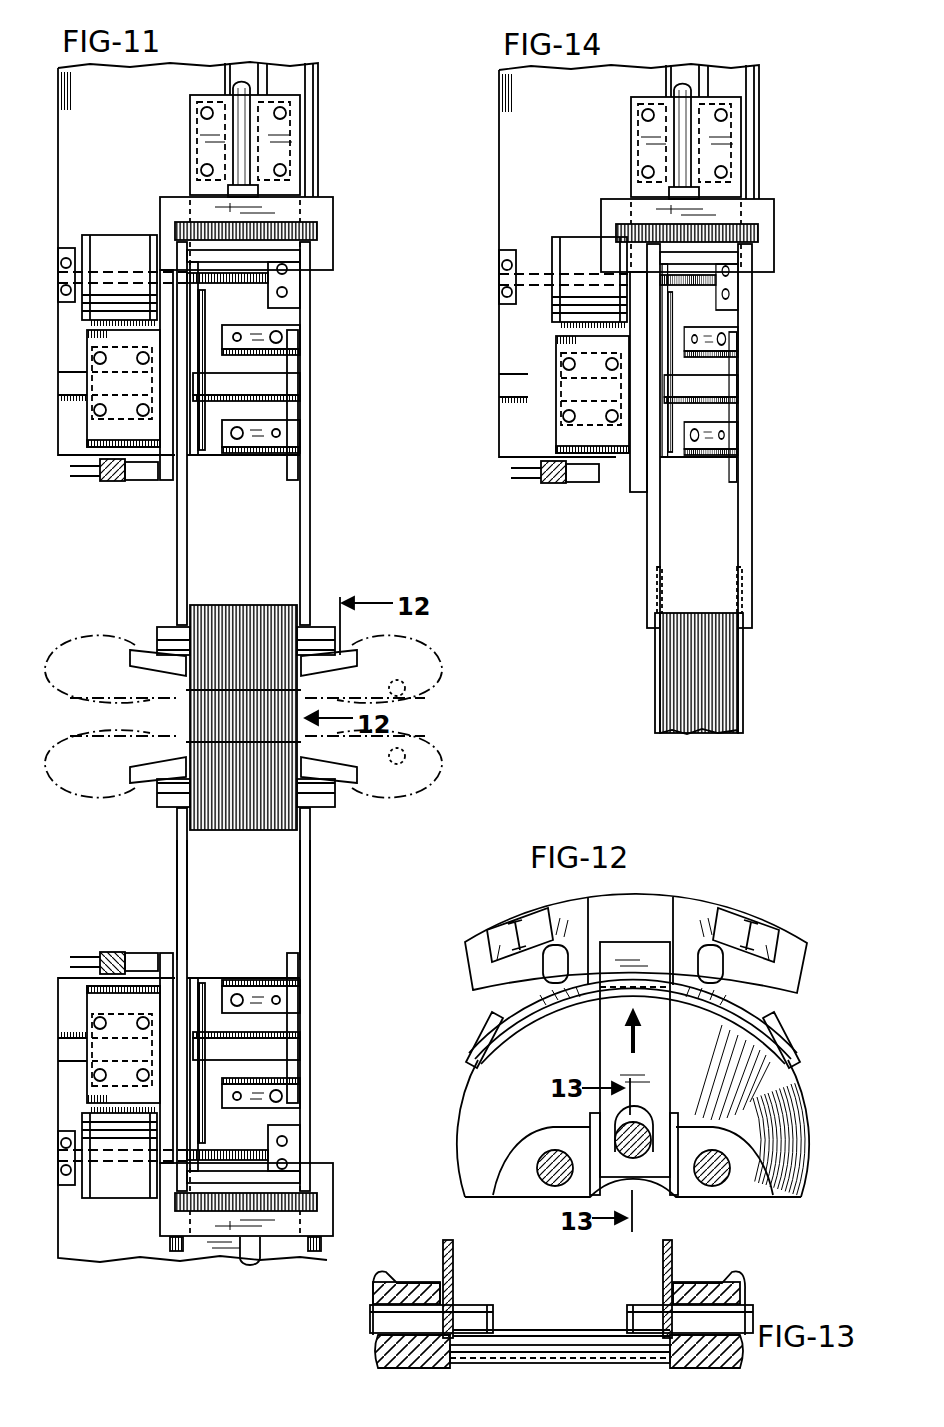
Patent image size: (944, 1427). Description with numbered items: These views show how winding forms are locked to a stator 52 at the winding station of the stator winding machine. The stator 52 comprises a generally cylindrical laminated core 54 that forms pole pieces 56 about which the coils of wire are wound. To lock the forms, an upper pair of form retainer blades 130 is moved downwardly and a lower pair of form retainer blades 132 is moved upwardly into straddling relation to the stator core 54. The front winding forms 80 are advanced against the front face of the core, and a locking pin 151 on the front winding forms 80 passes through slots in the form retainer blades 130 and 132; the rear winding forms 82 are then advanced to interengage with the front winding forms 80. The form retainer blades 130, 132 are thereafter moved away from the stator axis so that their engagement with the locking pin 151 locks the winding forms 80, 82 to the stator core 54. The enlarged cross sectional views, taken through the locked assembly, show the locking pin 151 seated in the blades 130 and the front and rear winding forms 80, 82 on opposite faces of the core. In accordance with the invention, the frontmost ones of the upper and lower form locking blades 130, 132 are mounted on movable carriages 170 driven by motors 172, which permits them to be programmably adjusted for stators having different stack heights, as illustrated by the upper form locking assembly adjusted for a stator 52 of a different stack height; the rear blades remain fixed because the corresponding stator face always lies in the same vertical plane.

In FIG. 11, the stator 52 is at (274, 845).
In FIG. 14, the stator 52 is at (656, 686).
In FIG. 12, the stator 52 is at (700, 902).
In FIG. 11, the laminated core 54 is at (215, 800).
In FIG. 14, the laminated core 54 is at (730, 692).
In FIG. 12, the pole pieces 56 is at (786, 1045).
In FIG. 11, the front winding forms 80 is at (97, 714).
In FIG. 12, the front winding forms 80 is at (470, 1127).
In FIG. 13, the front winding forms 80 is at (372, 1292).
In FIG. 11, the rear winding forms 82 is at (420, 716).
In FIG. 13, the rear winding forms 82 is at (745, 1290).
In FIG. 11, the upper form retainer blades 130 is at (300, 543).
In FIG. 14, the upper form retainer blades 130 is at (746, 547).
In FIG. 12, the upper form retainer blades 130 is at (608, 1040).
In FIG. 13, the upper form retainer blades 130 is at (455, 1255).
In FIG. 11, the lower form retainer blades 132 is at (300, 895).
In FIG. 12, the locking pin 151 is at (622, 1140).
In FIG. 13, the locking pin 151 is at (627, 1310).
In FIG. 11, the movable carriages 170 is at (190, 470).
In FIG. 14, the movable carriages 170 is at (632, 490).
In FIG. 11, the motors 172 is at (110, 238).
In FIG. 14, the motors 172 is at (572, 238).